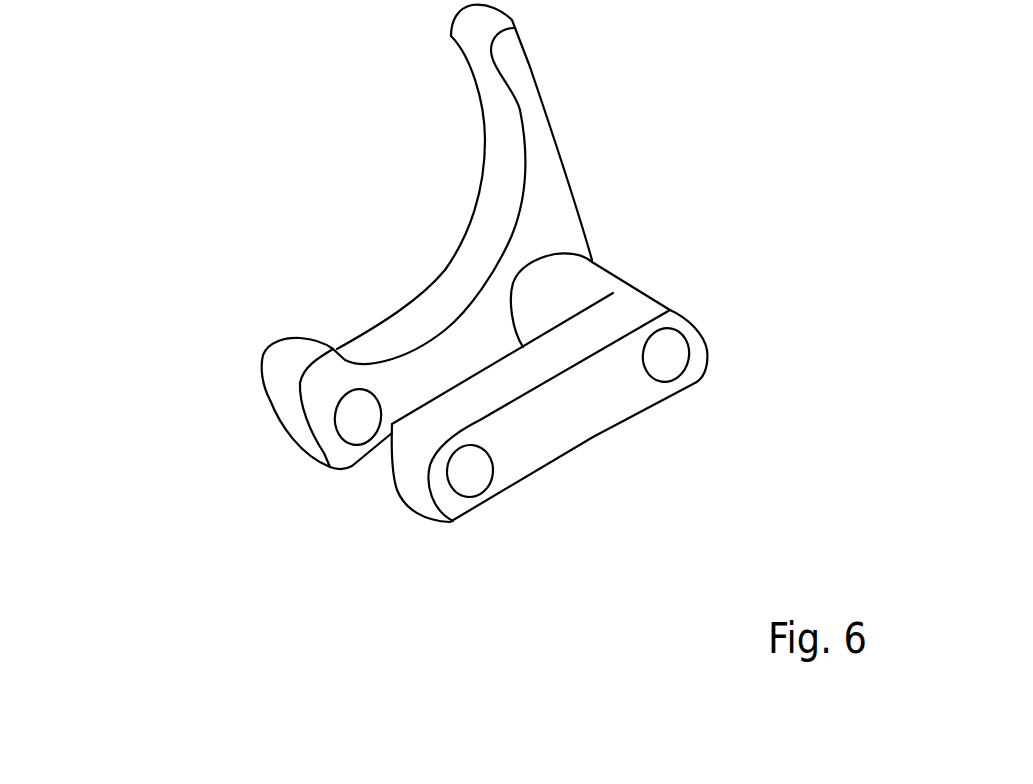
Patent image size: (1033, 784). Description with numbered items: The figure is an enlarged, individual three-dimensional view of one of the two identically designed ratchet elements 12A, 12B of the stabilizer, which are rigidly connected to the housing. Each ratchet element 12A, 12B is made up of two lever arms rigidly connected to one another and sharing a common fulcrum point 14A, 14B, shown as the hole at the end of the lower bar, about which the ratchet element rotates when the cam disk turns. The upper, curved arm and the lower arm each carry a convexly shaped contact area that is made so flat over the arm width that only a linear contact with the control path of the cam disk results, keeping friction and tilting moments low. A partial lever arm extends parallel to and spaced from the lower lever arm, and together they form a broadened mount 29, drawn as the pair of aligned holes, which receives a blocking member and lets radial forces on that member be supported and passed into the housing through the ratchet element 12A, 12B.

The ratchet element 12A is at (415, 328).
The ratchet element 12B is at (240, 204).
The fulcrum point 14A is at (666, 460).
The fulcrum point 14B is at (663, 365).
The mount 29 is at (470, 475).